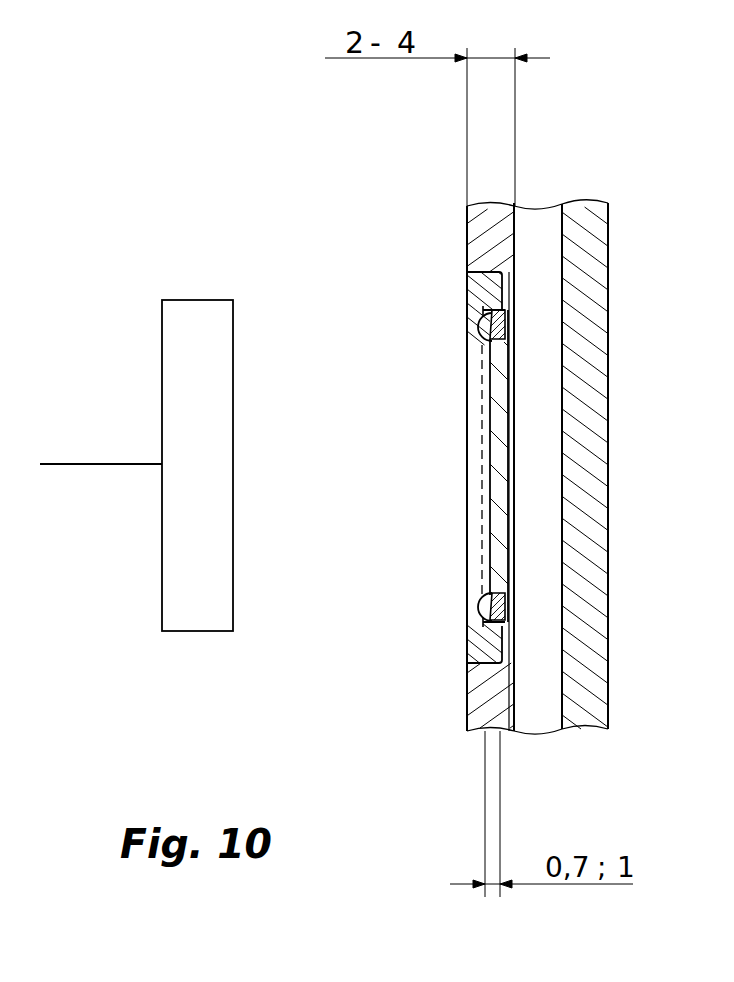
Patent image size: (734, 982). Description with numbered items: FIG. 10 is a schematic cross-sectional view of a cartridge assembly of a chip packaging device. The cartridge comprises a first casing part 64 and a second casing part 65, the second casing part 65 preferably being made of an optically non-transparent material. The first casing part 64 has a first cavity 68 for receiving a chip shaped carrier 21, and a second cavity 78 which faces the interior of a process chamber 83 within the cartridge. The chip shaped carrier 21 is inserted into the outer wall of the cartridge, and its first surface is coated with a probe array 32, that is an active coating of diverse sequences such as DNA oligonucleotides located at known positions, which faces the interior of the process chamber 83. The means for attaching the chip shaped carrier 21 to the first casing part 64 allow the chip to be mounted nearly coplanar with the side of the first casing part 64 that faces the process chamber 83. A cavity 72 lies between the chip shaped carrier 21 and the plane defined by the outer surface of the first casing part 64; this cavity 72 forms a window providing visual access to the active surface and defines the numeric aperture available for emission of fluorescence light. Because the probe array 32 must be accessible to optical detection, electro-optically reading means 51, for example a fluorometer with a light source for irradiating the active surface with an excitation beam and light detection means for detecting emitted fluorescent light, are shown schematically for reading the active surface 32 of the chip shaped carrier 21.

The first casing part 64 is at (478, 241).
The second casing part 65 is at (592, 582).
The chip shaped carrier 21 is at (493, 513).
The first cavity 68 is at (476, 391).
The cavity 72 is at (476, 572).
The probe array 32 is at (514, 370).
The second cavity 78 is at (514, 463).
The process chamber 83 is at (528, 697).
The electro-optically reading means 51 is at (178, 631).